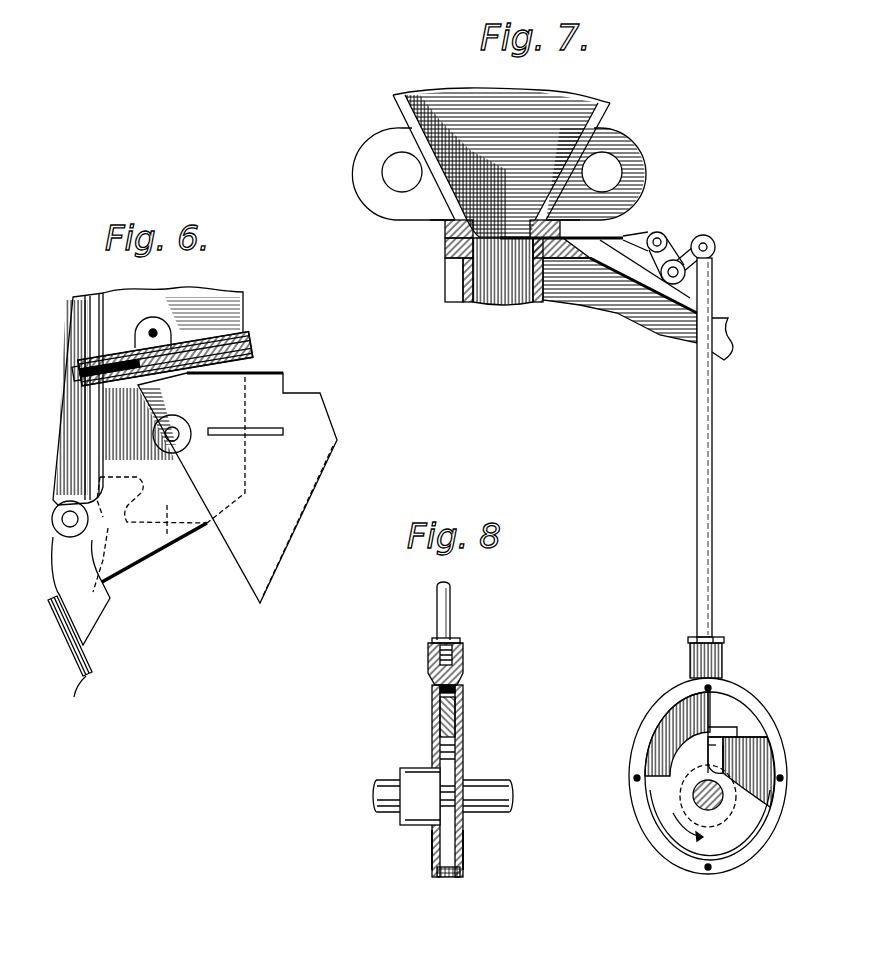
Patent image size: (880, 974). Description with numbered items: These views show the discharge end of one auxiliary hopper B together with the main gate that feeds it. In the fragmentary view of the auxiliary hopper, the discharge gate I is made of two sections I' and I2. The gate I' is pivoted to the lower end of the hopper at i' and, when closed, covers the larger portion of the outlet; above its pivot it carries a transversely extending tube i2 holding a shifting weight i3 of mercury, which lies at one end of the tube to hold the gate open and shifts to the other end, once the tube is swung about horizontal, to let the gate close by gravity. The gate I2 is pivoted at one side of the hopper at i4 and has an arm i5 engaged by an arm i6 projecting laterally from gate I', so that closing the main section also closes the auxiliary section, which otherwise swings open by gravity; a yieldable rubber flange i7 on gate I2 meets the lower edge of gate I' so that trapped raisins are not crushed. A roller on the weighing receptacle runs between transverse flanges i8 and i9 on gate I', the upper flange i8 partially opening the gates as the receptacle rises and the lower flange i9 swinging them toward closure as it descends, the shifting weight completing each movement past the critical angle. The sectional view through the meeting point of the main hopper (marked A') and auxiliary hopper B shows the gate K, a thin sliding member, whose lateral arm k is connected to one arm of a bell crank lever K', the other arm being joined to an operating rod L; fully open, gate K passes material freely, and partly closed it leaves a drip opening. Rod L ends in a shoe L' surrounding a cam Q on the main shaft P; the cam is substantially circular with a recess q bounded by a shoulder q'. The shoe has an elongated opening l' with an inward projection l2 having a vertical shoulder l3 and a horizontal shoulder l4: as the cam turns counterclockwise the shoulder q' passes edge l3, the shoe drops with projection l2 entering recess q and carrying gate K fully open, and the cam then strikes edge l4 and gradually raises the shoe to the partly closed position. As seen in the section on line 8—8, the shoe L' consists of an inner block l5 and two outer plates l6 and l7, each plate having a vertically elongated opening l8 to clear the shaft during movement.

In FIG. 6, the auxiliary hopper B is at (204, 298).
In FIG. 7, the auxiliary hopper B is at (490, 306).
In FIG. 6, the shifting weight i3 is at (112, 353).
In FIG. 6, the tube i2 is at (243, 333).
In FIG. 6, the discharge gate I is at (237, 466).
In FIG. 6, the gate section I' is at (307, 522).
In FIG. 6, the upper transverse flange i8 is at (230, 450).
In FIG. 6, the lower transverse flange i9 is at (256, 430).
In FIG. 6, the arm i5 is at (108, 477).
In FIG. 6, the pivot i' is at (182, 448).
In FIG. 6, the pivot i4 is at (72, 521).
In FIG. 6, the arm i6 is at (165, 548).
In FIG. 6, the auxiliary gate section I2 is at (84, 633).
In FIG. 6, the projecting flange i7 is at (77, 699).
In FIG. 7, the hopper A' is at (527, 163).
In FIG. 7, the gate K is at (503, 250).
In FIG. 7, the arm k is at (640, 222).
In FIG. 7, the bell crank lever K' is at (684, 247).
In FIG. 7, the operating rod L is at (724, 436).
In FIG. 8, the operating rod L is at (463, 605).
In FIG. 7, the section line 8— 8 is at (690, 643).
In FIG. 7, the elongated opening l' is at (651, 734).
In FIG. 7, the vertical shoulder l3 is at (712, 710).
In FIG. 7, the shoe L' is at (753, 702).
In FIG. 7, the inwardly extending projection l2 is at (730, 729).
In FIG. 8, the inwardly extending projection l2 is at (463, 708).
In FIG. 7, the horizontal shoulder l4 is at (740, 733).
In FIG. 8, the horizontal shoulder l4 is at (440, 730).
In FIG. 7, the opening l8 is at (730, 753).
In FIG. 8, the opening l8 is at (437, 758).
In FIG. 7, the recess q is at (772, 772).
In FIG. 7, the shoulder q' is at (685, 771).
In FIG. 7, the main shaft P is at (693, 800).
In FIG. 8, the main shaft P is at (513, 803).
In FIG. 7, the cam Q is at (677, 827).
In FIG. 8, the cam Q is at (450, 810).
In FIG. 7, the inner block l5 is at (753, 847).
In FIG. 8, the inner block l5 is at (455, 877).
In FIG. 8, the outer plate l7 is at (432, 850).
In FIG. 8, the outer plate l6 is at (463, 853).